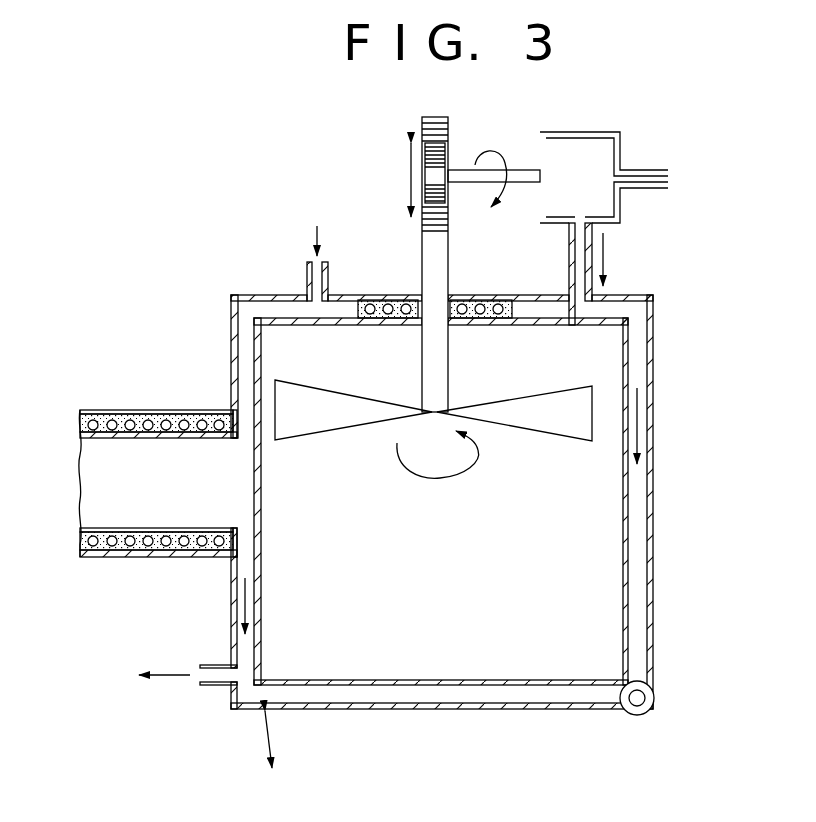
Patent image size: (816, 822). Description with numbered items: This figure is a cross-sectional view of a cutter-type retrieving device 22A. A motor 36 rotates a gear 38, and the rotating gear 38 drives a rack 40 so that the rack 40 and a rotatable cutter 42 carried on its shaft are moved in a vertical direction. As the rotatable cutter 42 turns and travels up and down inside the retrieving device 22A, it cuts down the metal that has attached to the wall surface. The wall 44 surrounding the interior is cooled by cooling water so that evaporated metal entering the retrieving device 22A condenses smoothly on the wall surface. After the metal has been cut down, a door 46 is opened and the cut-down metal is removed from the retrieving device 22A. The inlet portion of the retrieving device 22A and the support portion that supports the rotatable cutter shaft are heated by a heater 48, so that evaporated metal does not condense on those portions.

The cutter-type retrieving device 22A is at (652, 487).
The motor 36 is at (621, 154).
The gear 38 is at (445, 188).
The rack 40 is at (422, 133).
The rotatable cutter 42 is at (520, 435).
The wall 44 is at (245, 353).
The door 46 is at (388, 695).
The heater 48 is at (497, 300).